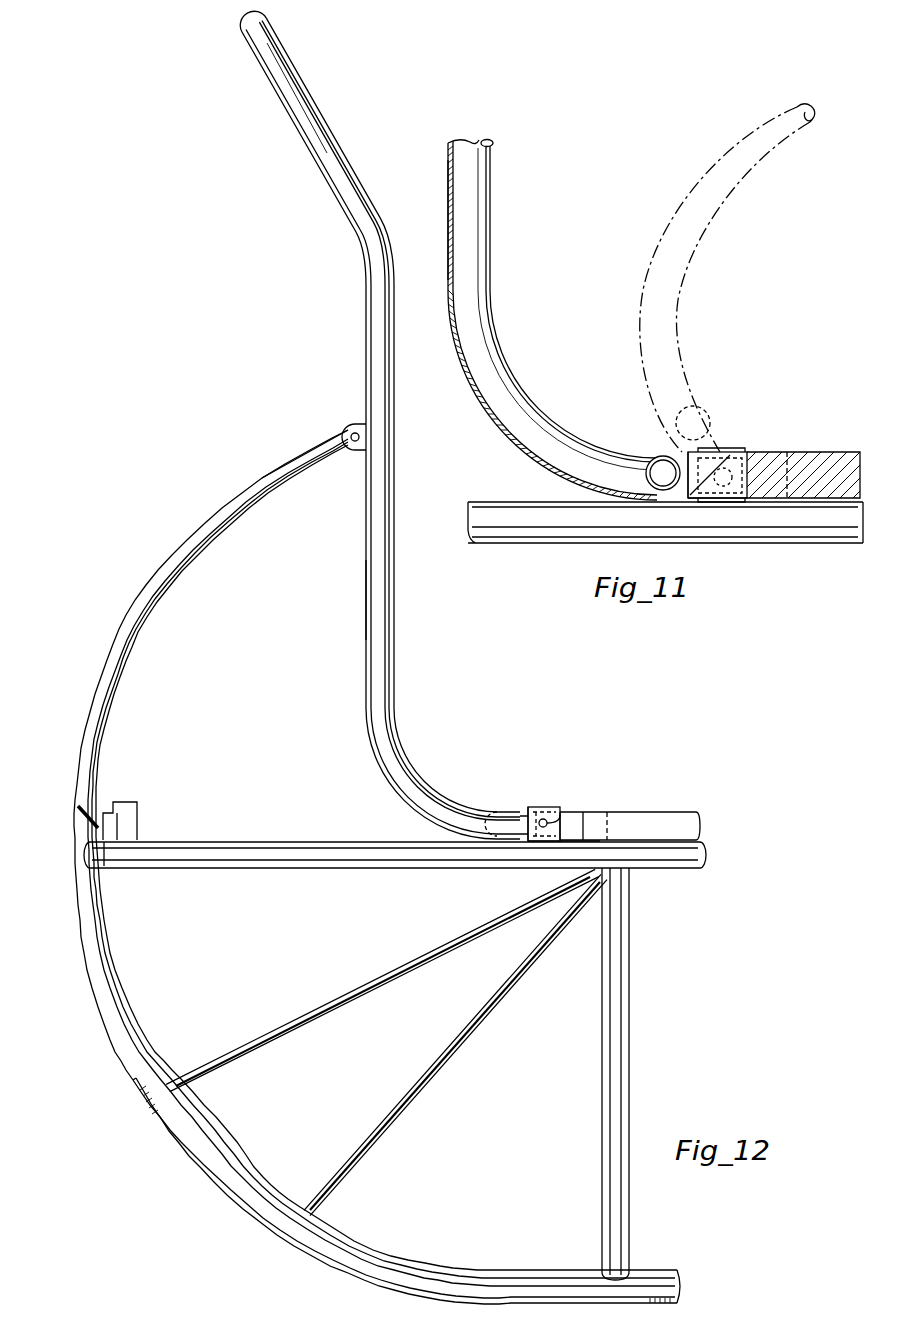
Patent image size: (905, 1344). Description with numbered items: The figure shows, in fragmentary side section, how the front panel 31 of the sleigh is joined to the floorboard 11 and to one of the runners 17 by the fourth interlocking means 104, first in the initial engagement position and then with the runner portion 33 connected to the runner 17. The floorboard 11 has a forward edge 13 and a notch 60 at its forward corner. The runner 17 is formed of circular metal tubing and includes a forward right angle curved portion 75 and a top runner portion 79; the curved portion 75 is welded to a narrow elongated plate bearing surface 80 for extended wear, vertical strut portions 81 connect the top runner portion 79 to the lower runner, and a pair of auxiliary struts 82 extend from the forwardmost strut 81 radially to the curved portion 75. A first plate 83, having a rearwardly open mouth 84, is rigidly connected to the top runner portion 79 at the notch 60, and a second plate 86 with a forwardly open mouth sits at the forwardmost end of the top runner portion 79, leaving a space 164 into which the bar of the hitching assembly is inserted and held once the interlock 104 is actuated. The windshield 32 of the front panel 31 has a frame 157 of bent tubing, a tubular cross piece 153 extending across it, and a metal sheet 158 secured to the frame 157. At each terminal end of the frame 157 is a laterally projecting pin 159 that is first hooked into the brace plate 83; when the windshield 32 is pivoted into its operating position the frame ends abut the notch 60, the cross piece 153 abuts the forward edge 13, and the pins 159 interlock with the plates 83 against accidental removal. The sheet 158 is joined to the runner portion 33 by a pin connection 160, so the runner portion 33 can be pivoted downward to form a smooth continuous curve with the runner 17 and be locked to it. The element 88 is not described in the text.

In FIG. 11, the floorboard 11 is at (811, 458).
In FIG. 12, the floorboard 11 is at (660, 812).
In FIG. 11, the forward edge 13 is at (692, 500).
In FIG. 12, the forward edge 13 is at (527, 812).
In FIG. 12, the runner 17 is at (279, 1232).
In FIG. 12, the front panel 31 is at (290, 426).
In FIG. 11, the windshield 32 is at (489, 218).
In FIG. 12, the windshield 32 is at (366, 326).
In FIG. 12, the runner portion 33 is at (189, 541).
In FIG. 12, the notch 60 is at (573, 843).
In FIG. 12, the forward right angle curved portion 75 is at (239, 1208).
In FIG. 11, the top runner portion 79 is at (514, 545).
In FIG. 12, the top runner portion 79 is at (290, 869).
In FIG. 12, the plate bearing surface 80 is at (348, 1276).
In FIG. 12, the vertical strut portion 81 is at (623, 1102).
In FIG. 12, the auxiliary strut 82 is at (360, 990).
In FIG. 11, the first plate 83 is at (742, 455).
In FIG. 12, the first plate 83 is at (535, 843).
In FIG. 12, the rearwardly open mouth 84 is at (548, 827).
In FIG. 12, the second plate 86 is at (139, 825).
In FIG. 12, the end fitting 88 is at (100, 830).
In FIG. 11, the fourth interlocking means 104 is at (736, 438).
In FIG. 12, the fourth interlocking means 104 is at (549, 792).
In FIG. 11, the tubular cross piece 153 is at (707, 410).
In FIG. 12, the tubular cross piece 153 is at (490, 812).
In FIG. 11, the frame 157 is at (490, 279).
In FIG. 12, the frame 157 is at (396, 652).
In FIG. 11, the metal sheet 158 is at (503, 433).
In FIG. 12, the metal sheet 158 is at (366, 672).
In FIG. 11, the laterally projecting pin 159 is at (718, 502).
In FIG. 12, the laterally projecting pin 159 is at (565, 830).
In FIG. 12, the pin connection 160 is at (348, 428).
In FIG. 12, the space 164 is at (110, 870).